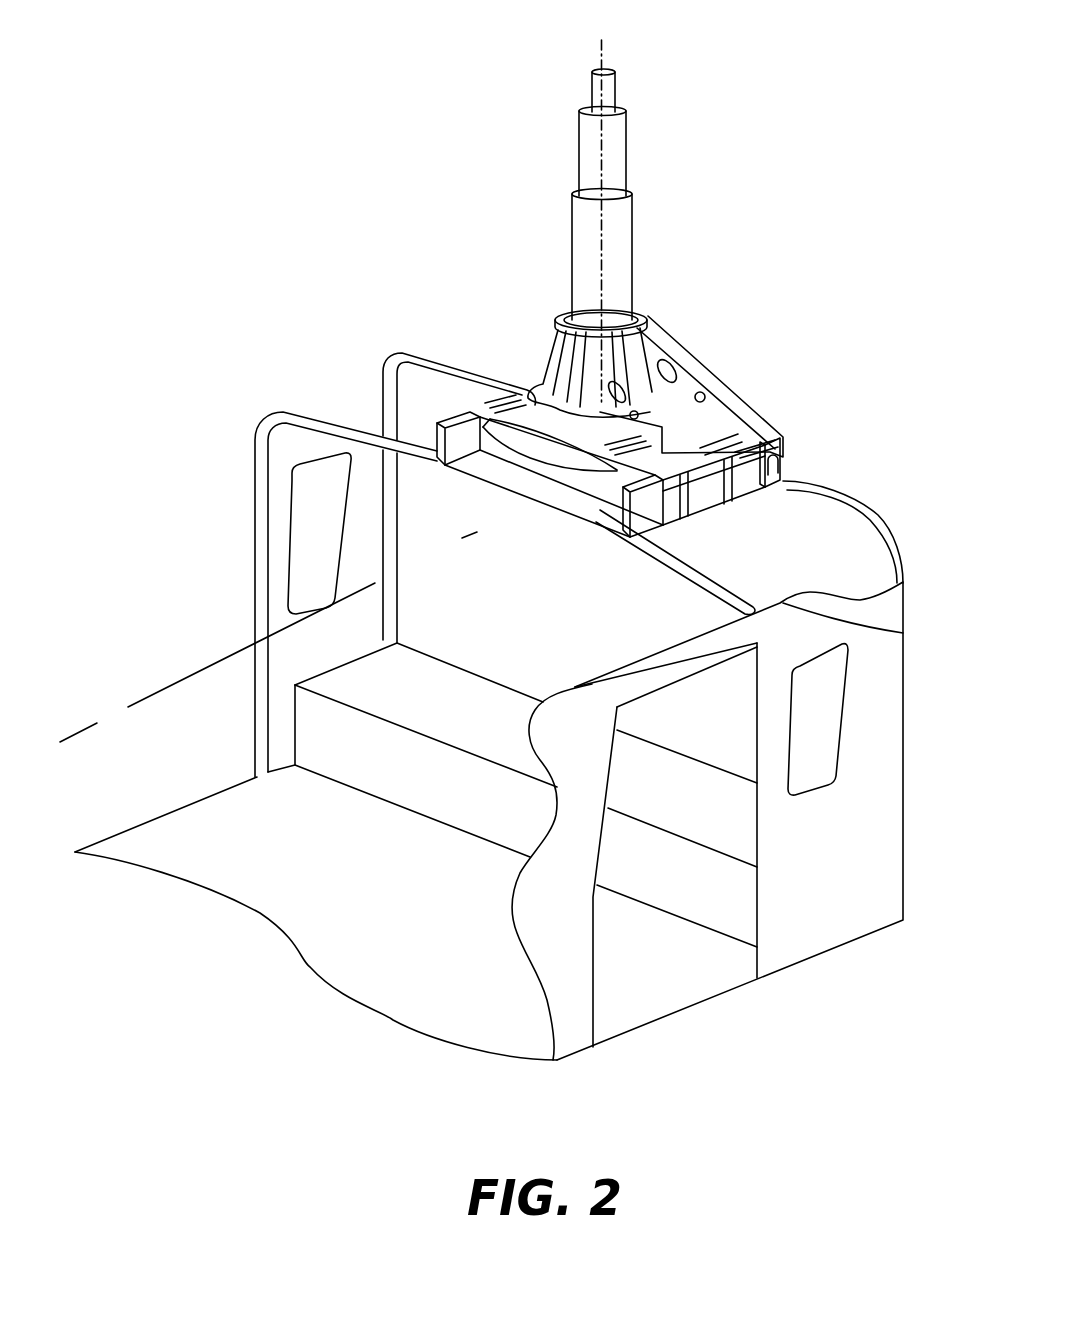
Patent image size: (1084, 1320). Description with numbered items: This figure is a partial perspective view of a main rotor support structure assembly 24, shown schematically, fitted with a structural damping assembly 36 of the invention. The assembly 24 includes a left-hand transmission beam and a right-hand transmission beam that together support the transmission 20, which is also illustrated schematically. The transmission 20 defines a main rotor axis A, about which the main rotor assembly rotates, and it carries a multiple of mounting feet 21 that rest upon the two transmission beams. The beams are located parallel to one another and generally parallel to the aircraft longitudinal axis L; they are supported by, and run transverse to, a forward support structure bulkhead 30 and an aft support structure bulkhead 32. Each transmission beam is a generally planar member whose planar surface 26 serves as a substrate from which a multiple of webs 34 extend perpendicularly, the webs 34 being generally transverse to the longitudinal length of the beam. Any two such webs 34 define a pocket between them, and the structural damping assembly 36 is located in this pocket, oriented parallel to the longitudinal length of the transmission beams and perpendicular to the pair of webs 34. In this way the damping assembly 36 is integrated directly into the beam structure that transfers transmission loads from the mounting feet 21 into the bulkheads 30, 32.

The transmission 20 is at (681, 413).
The mounting feet 21 is at (758, 417).
The main rotor support structure assembly 24 is at (315, 358).
The planar surface 26 is at (903, 634).
The forward support structure bulkhead 30 is at (253, 460).
The aft support structure bulkhead 32 is at (437, 360).
The webs 34 is at (780, 477).
The structural damping assembly 36 is at (757, 427).
The main rotor axis A is at (606, 212).
The aircraft longitudinal axis L is at (153, 697).